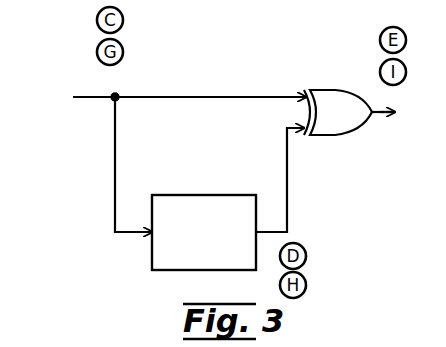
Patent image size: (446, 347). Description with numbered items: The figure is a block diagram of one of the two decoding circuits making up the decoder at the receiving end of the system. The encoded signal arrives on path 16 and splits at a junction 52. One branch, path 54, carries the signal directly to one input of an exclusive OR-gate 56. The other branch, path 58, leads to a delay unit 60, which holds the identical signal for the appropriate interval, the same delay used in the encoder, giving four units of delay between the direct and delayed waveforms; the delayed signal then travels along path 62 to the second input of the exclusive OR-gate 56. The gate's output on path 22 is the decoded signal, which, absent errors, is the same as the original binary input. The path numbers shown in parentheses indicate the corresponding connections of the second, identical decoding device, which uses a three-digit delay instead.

The path 16 is at (82, 109).
The node 52 is at (115, 94).
The path 54 is at (240, 95).
The exclusive OR-gate 56 is at (320, 91).
The path 22 is at (379, 114).
The second signal line 58 is at (115, 191).
The delay element 60 is at (247, 195).
The delayed signal line 62 is at (287, 190).